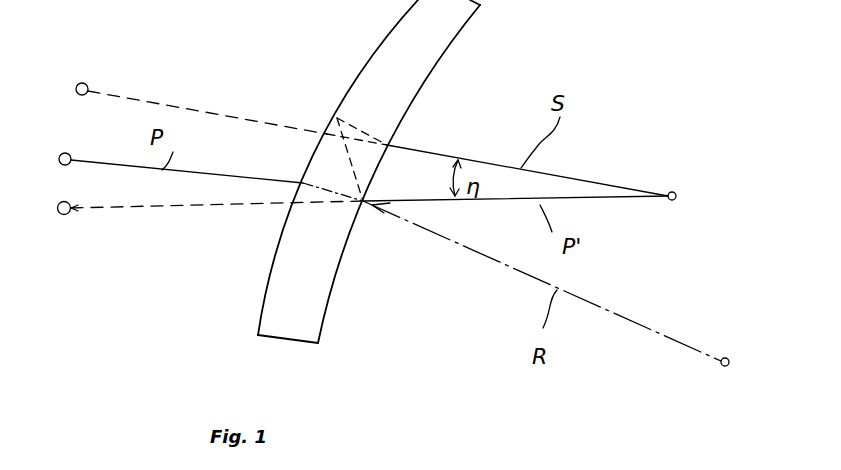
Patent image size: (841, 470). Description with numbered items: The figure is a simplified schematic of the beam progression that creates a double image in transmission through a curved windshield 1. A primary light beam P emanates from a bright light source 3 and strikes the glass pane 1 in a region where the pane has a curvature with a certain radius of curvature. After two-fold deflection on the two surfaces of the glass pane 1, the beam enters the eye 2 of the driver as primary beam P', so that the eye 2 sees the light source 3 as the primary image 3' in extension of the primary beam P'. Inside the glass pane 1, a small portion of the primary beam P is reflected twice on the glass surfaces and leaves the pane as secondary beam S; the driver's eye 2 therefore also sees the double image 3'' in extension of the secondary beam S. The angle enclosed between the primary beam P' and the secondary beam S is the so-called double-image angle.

The curved windshield 1 is at (276, 290).
The eye of the driver 2 is at (677, 189).
The light source 3 is at (155, 144).
The primary image 3' is at (211, 242).
The double image 3'' is at (201, 75).